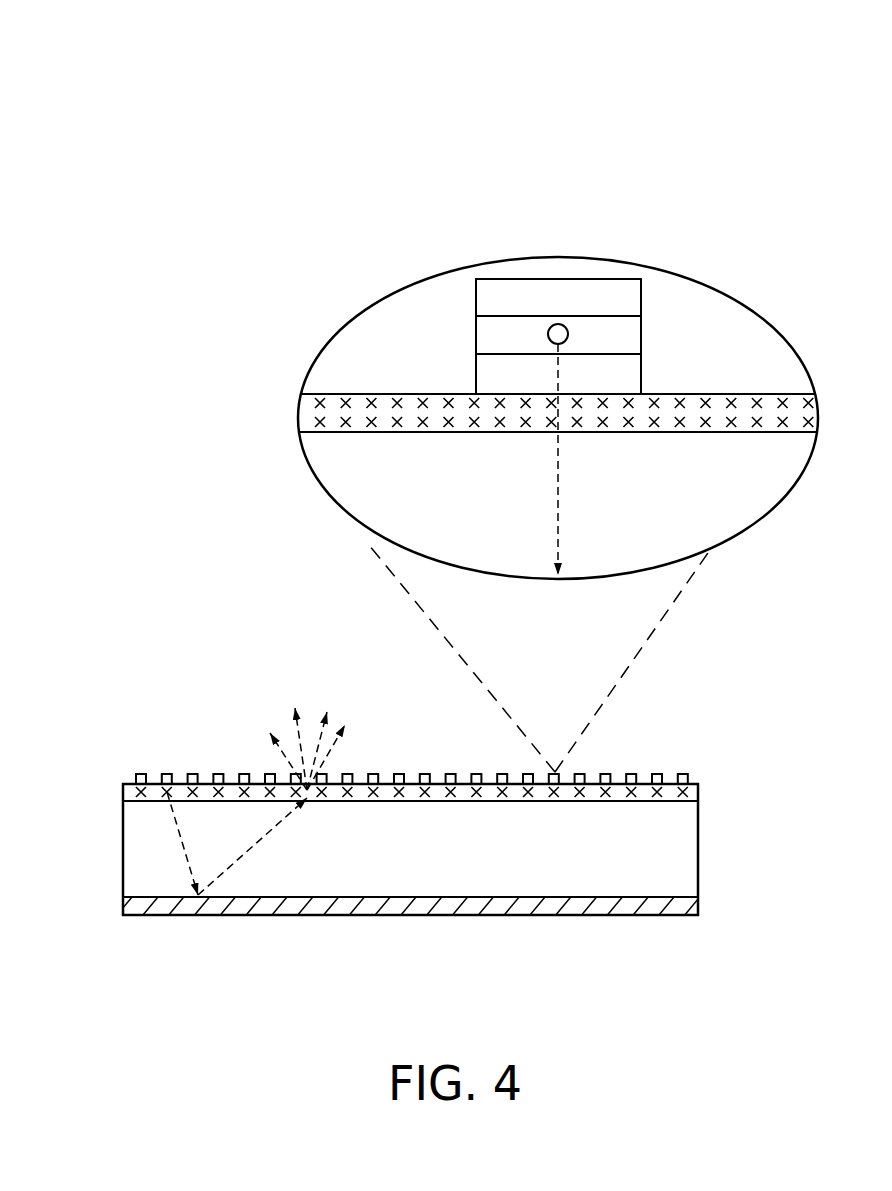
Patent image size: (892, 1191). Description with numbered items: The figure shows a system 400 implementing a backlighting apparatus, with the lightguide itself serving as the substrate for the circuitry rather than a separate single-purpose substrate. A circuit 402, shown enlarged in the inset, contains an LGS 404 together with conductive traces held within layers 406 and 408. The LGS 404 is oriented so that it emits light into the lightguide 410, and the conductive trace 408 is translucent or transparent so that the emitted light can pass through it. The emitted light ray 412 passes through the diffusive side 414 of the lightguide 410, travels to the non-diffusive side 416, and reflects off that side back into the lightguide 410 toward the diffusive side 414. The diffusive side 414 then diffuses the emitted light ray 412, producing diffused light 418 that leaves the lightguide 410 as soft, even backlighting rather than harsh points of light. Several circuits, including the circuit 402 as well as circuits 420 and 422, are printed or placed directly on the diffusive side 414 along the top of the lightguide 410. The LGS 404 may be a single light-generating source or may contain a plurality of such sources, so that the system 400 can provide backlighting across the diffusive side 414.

The system 400 is at (421, 489).
The circuit 402 is at (167, 770).
The LGS 404 is at (555, 325).
The layer 406 is at (632, 288).
The conductive trace 408 is at (605, 373).
The lightguide 410 is at (688, 845).
The emitted light ray 412 is at (180, 857).
The diffusive side 414 is at (132, 788).
The non-diffusive side 416 is at (293, 904).
The diffused light 418 is at (273, 730).
The circuit 420 is at (603, 770).
The circuit 422 is at (680, 770).